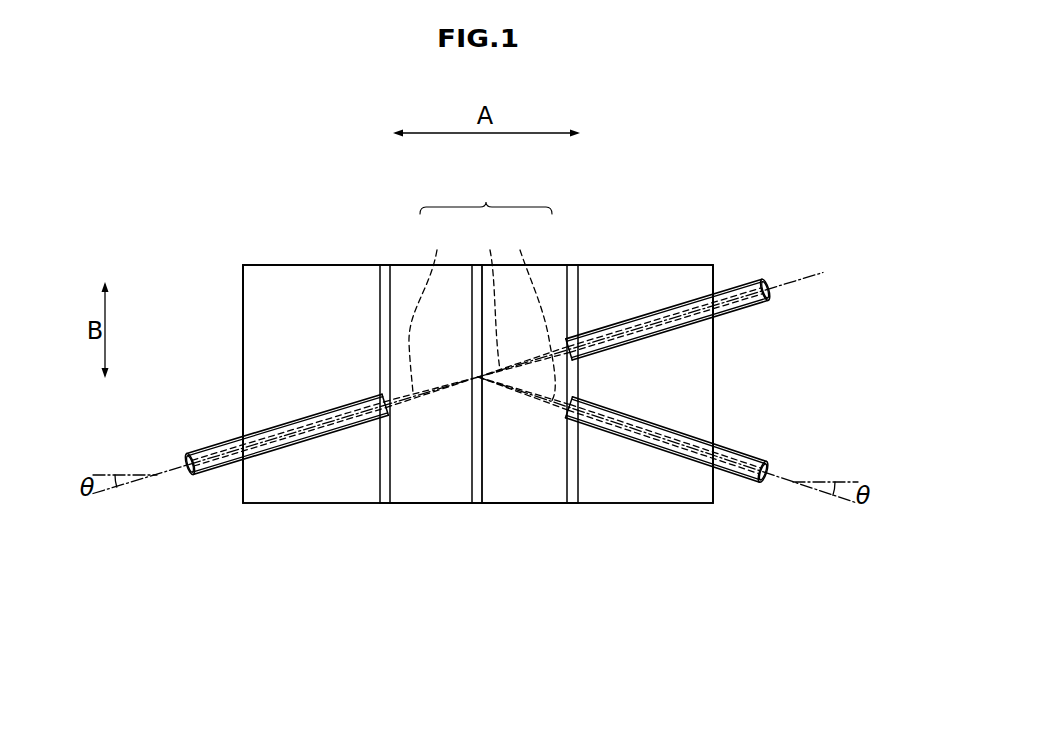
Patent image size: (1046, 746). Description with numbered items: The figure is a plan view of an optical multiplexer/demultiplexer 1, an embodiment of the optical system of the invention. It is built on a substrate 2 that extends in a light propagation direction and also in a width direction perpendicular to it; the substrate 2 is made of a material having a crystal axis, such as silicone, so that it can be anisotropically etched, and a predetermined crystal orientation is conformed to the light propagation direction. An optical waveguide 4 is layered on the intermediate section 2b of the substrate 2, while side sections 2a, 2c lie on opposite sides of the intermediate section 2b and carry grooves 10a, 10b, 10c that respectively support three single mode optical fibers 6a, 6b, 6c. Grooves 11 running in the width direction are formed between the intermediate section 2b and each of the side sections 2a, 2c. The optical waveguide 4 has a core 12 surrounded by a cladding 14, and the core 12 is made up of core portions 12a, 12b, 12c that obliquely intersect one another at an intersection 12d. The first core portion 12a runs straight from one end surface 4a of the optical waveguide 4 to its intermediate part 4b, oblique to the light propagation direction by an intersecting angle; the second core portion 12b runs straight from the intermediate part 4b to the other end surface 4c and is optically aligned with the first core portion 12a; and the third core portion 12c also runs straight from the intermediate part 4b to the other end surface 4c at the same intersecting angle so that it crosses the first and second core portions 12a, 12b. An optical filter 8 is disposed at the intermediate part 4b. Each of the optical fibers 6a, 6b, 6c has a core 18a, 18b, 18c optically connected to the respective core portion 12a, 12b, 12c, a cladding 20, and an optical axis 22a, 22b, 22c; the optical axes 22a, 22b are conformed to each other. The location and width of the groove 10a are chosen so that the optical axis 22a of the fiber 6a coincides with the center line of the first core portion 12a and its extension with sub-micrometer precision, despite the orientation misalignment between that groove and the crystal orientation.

The optical multiplexer/demultiplexer 1 is at (824, 203).
The substrate 2 is at (273, 263).
The side section of the substrate 2a is at (262, 504).
The intermediate section of the substrate 2b is at (432, 504).
The side section of the substrate 2c is at (645, 504).
The optical waveguide 4 is at (411, 508).
The one end surface of the optical waveguide 4a is at (382, 315).
The intermediate part of the optical waveguide 4b is at (492, 508).
The other end surface of the optical waveguide 4c is at (568, 317).
The optical fiber 6a is at (199, 452).
The optical fiber 6b is at (752, 283).
The optical fiber 6c is at (769, 466).
The optical filter 8 is at (476, 480).
The groove 10a is at (280, 449).
The groove 10b is at (688, 303).
The groove 10c is at (689, 437).
The grooves 11 is at (383, 498).
The core 12 is at (486, 194).
The first core portion 12a is at (434, 305).
The second core portion 12b is at (487, 294).
The third core portion 12c is at (535, 310).
The intersection 12d is at (471, 380).
The cladding 14 is at (530, 477).
The core of the optical fiber 18a is at (221, 444).
The core of the optical fiber 18b is at (747, 286).
The core of the optical fiber 18c is at (752, 457).
The cladding 20 is at (221, 467).
The optical axis 22a is at (131, 482).
The optical axis 22b is at (818, 290).
The optical axis 22c is at (808, 488).